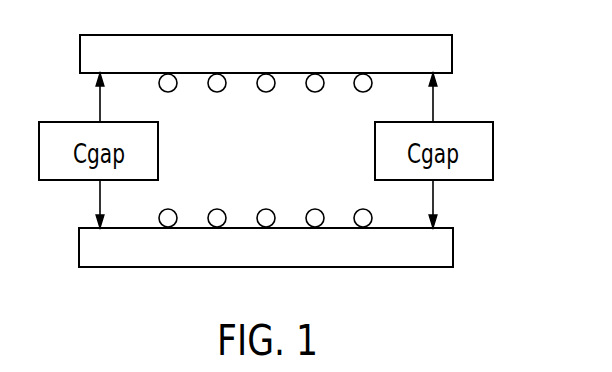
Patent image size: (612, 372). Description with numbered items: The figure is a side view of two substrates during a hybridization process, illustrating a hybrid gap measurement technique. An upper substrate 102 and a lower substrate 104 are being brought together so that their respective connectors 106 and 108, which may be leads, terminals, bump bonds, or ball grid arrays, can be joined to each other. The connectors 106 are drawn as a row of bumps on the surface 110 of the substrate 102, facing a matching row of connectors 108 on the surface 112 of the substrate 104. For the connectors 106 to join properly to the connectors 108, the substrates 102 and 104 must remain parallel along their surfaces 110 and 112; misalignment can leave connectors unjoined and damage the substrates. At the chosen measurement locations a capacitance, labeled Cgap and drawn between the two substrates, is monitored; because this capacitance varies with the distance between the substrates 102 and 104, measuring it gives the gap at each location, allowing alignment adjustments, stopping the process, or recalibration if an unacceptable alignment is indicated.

The substrate 102 is at (452, 45).
The substrate 104 is at (453, 250).
The connectors 106 is at (357, 91).
The connectors 108 is at (354, 213).
The surface 110 is at (452, 73).
The surface 112 is at (453, 228).